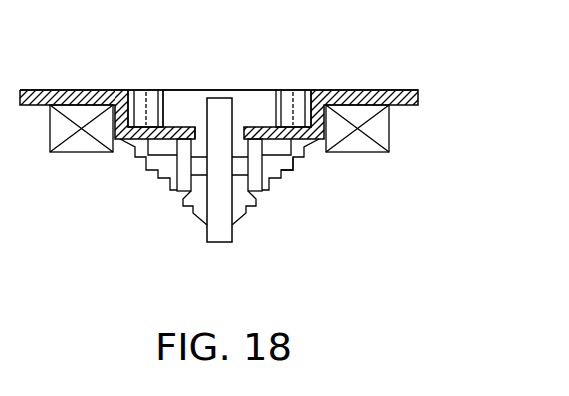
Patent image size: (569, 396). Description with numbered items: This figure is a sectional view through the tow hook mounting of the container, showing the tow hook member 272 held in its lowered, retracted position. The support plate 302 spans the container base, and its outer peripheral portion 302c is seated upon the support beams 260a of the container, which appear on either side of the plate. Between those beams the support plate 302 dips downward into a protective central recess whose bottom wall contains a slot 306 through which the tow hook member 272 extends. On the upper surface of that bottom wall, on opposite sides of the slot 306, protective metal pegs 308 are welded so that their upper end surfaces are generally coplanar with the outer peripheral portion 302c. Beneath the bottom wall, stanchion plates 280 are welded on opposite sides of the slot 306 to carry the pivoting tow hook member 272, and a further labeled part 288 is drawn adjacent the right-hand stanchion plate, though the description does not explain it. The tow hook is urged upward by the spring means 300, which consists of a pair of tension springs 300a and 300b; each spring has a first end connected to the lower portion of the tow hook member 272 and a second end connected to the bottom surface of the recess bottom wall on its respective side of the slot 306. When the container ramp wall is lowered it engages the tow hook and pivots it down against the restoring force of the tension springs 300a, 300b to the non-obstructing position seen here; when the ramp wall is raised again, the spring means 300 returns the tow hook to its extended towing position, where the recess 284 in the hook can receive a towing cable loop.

The support plate 302 is at (18, 89).
The outer peripheral portion of the support plate 302c is at (55, 89).
The protective metal pegs 308 is at (148, 102).
The slot 306 is at (199, 128).
The tow hook member 272 is at (223, 102).
The support beams 260a is at (58, 137).
The first tension spring 300a is at (158, 176).
The second tension spring 300b is at (275, 185).
The recess 284 is at (210, 173).
The housing step 288 is at (297, 157).
The stanchion plates 280 is at (243, 203).
The spring means 300 is at (186, 221).